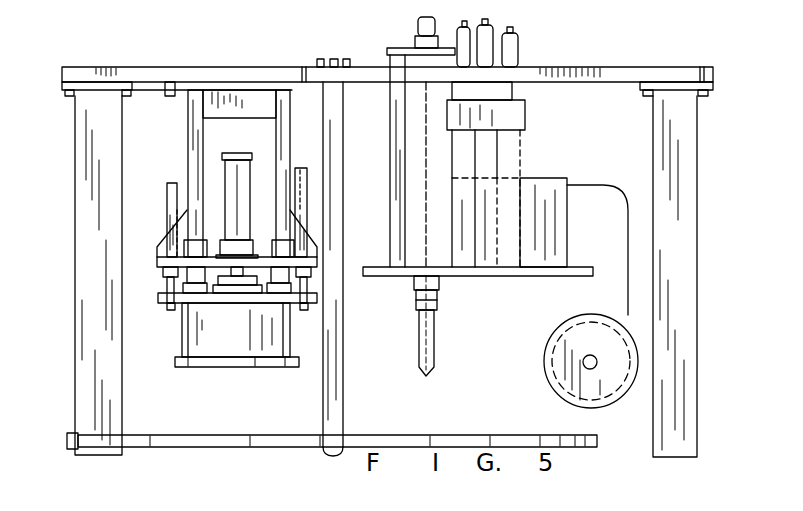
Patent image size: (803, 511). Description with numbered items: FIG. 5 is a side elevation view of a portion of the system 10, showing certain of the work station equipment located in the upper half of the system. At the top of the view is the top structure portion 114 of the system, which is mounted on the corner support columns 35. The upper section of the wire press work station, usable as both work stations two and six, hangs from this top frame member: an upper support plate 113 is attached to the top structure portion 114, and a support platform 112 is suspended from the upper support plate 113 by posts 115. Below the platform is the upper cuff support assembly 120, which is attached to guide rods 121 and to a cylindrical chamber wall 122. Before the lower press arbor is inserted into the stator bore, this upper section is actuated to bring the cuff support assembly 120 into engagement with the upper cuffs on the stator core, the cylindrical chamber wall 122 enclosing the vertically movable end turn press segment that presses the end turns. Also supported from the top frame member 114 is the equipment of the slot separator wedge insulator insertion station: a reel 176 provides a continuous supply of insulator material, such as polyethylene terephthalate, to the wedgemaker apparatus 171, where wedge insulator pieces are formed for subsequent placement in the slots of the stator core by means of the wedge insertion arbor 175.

The base 10 is at (525, 436).
The corner support columns 35 is at (112, 410).
The support platform 112 is at (158, 263).
The upper support plate 113 is at (224, 85).
The top structure portion 114 is at (150, 73).
The posts 115 is at (193, 118).
The upper cuff support assembly 120 is at (198, 367).
The guide rods 121 is at (166, 195).
The cylindrical chamber wall 122 is at (187, 333).
The wedgemaker apparatus 171 is at (530, 167).
The wedge insertion arbor 175 is at (430, 341).
The reel 176 is at (553, 375).